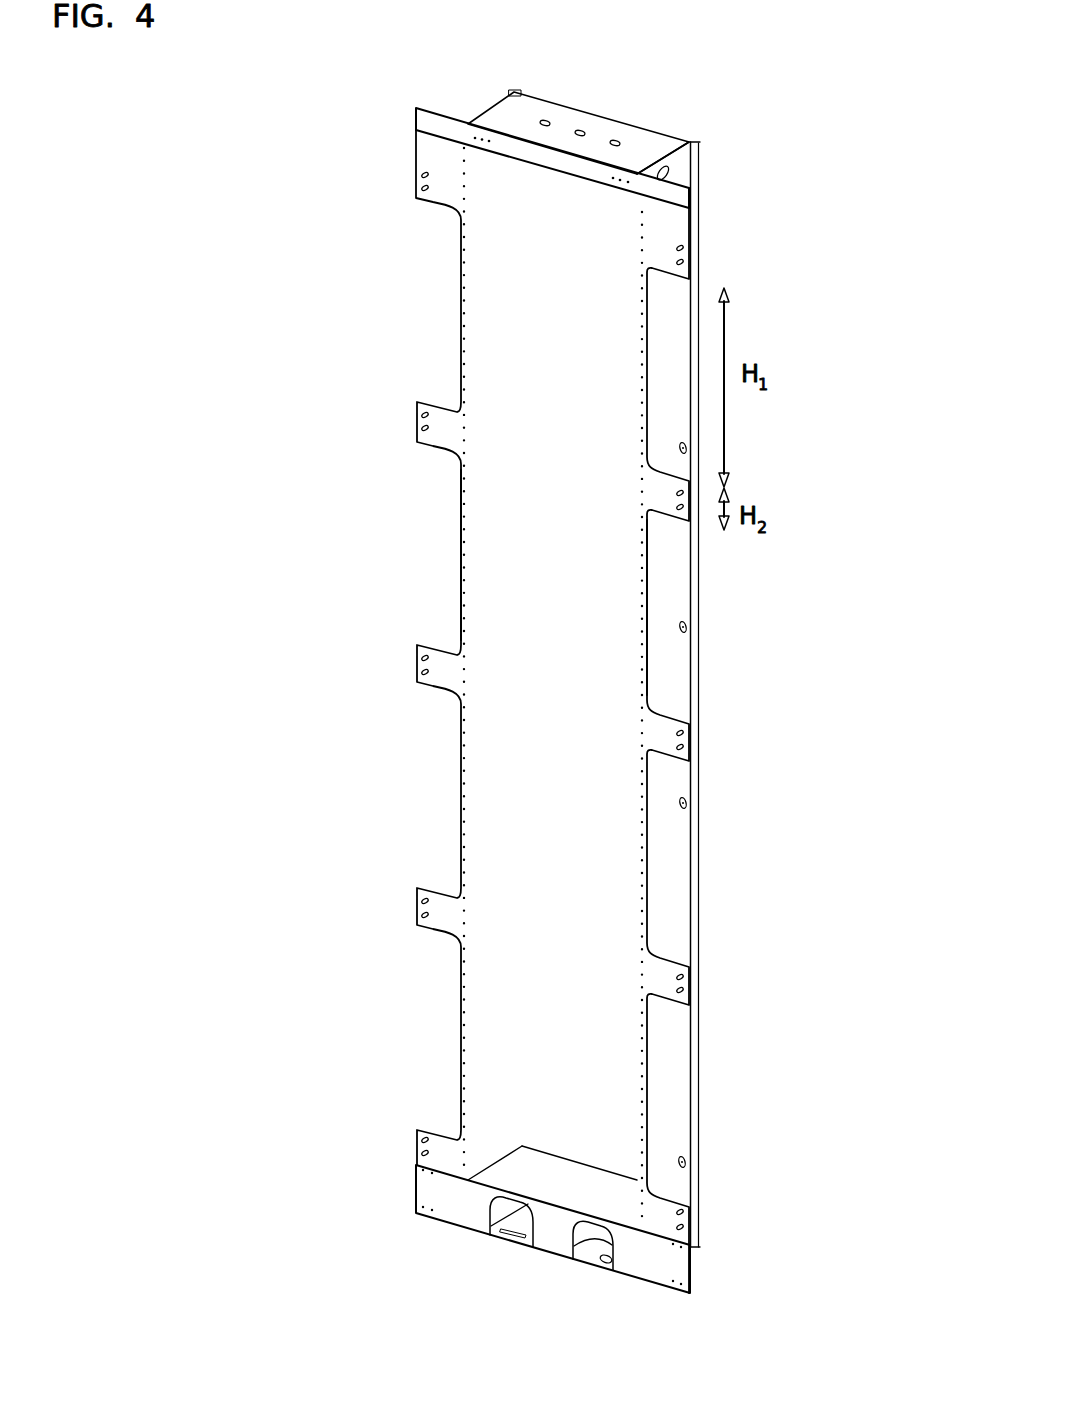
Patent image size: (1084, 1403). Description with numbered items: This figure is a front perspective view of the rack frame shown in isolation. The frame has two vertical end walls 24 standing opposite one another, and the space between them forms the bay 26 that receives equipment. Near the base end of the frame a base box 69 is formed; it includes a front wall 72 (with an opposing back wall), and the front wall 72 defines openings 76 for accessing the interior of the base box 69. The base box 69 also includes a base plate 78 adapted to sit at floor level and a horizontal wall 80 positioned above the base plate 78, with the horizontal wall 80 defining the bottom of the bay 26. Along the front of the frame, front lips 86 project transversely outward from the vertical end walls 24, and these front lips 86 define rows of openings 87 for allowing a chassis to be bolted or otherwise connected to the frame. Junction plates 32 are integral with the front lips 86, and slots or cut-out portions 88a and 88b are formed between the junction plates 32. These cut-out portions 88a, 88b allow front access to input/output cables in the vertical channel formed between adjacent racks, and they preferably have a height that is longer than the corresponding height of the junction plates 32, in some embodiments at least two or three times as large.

The vertical end wall 24 is at (495, 792).
The bay 26 is at (590, 928).
The junction plate 32 is at (681, 247).
The base box 69 is at (440, 1183).
The front wall 72 is at (450, 1200).
The opening 76 is at (533, 1230).
The base plate 78 is at (590, 1252).
The horizontal wall 80 is at (535, 1165).
The front lip 86 is at (462, 548).
The opening 87 is at (463, 482).
The cut-out portion 88a is at (645, 567).
The cut-out portion 88b is at (462, 510).